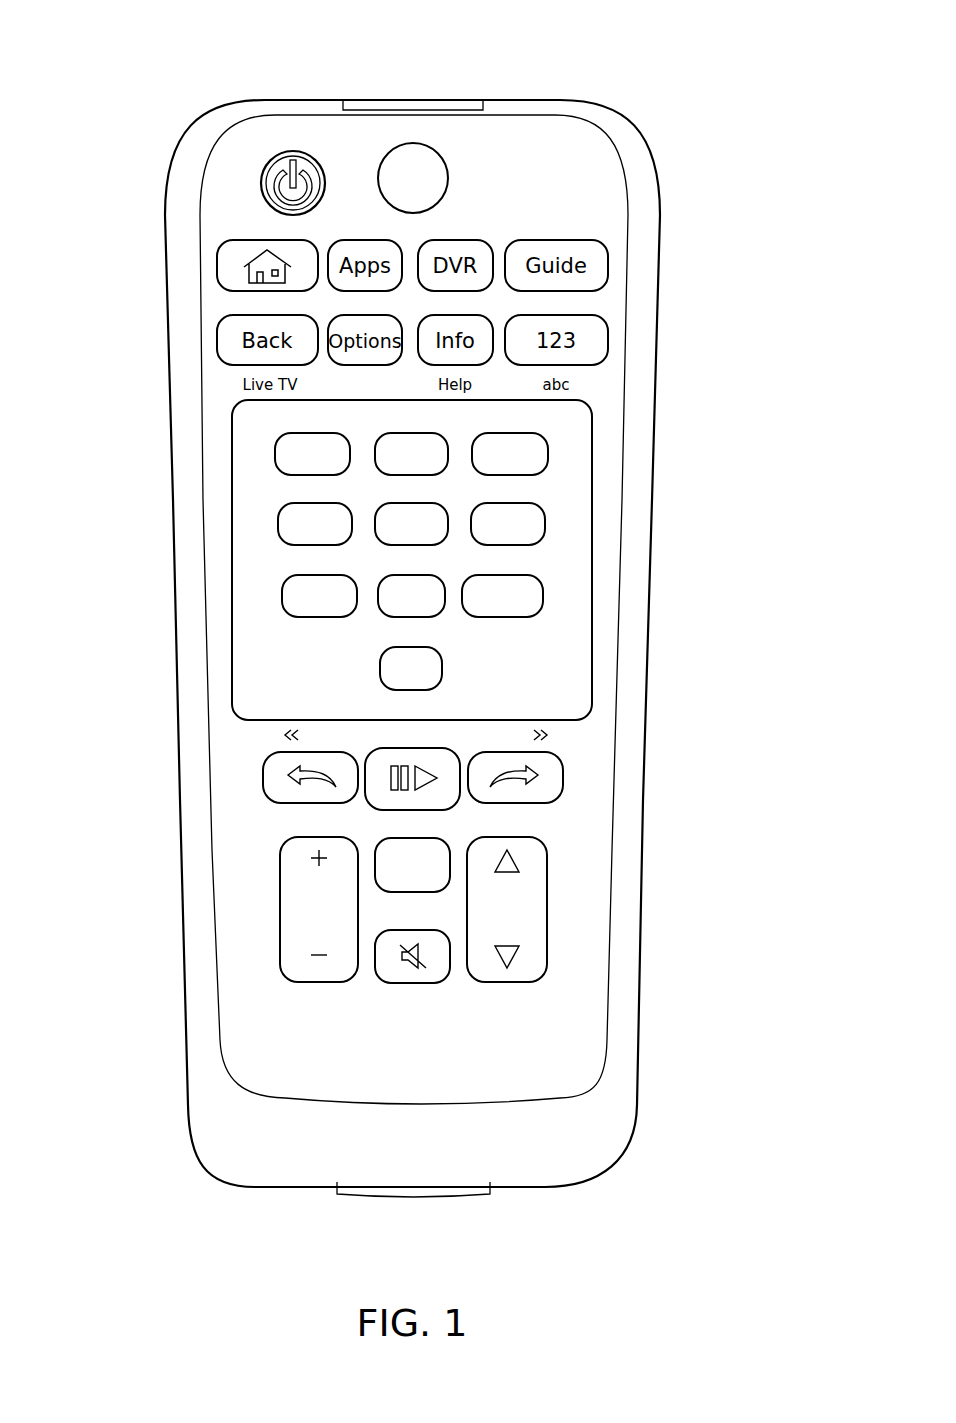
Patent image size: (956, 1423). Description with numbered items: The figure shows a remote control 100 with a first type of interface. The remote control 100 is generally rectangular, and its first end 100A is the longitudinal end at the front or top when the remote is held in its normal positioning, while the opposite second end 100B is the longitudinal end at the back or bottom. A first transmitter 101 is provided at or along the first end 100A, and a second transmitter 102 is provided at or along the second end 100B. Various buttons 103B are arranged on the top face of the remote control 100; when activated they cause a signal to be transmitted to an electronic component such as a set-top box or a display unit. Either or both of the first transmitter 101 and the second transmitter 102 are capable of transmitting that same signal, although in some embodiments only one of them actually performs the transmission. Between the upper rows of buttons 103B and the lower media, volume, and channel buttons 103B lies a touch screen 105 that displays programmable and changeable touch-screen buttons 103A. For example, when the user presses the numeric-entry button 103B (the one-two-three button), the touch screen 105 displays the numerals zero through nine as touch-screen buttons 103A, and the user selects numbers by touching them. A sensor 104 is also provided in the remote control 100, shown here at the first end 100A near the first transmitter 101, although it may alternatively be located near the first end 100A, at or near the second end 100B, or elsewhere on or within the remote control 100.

The remote control 100 is at (728, 70).
The first end 100A is at (364, 72).
The second end 100B is at (482, 1218).
The first transmitter 101 is at (430, 99).
The second transmitter 102 is at (360, 1192).
The touch-screen buttons 103A is at (545, 529).
The buttons 103B is at (547, 880).
The sensor 104 is at (448, 170).
The touch screen 105 is at (263, 553).